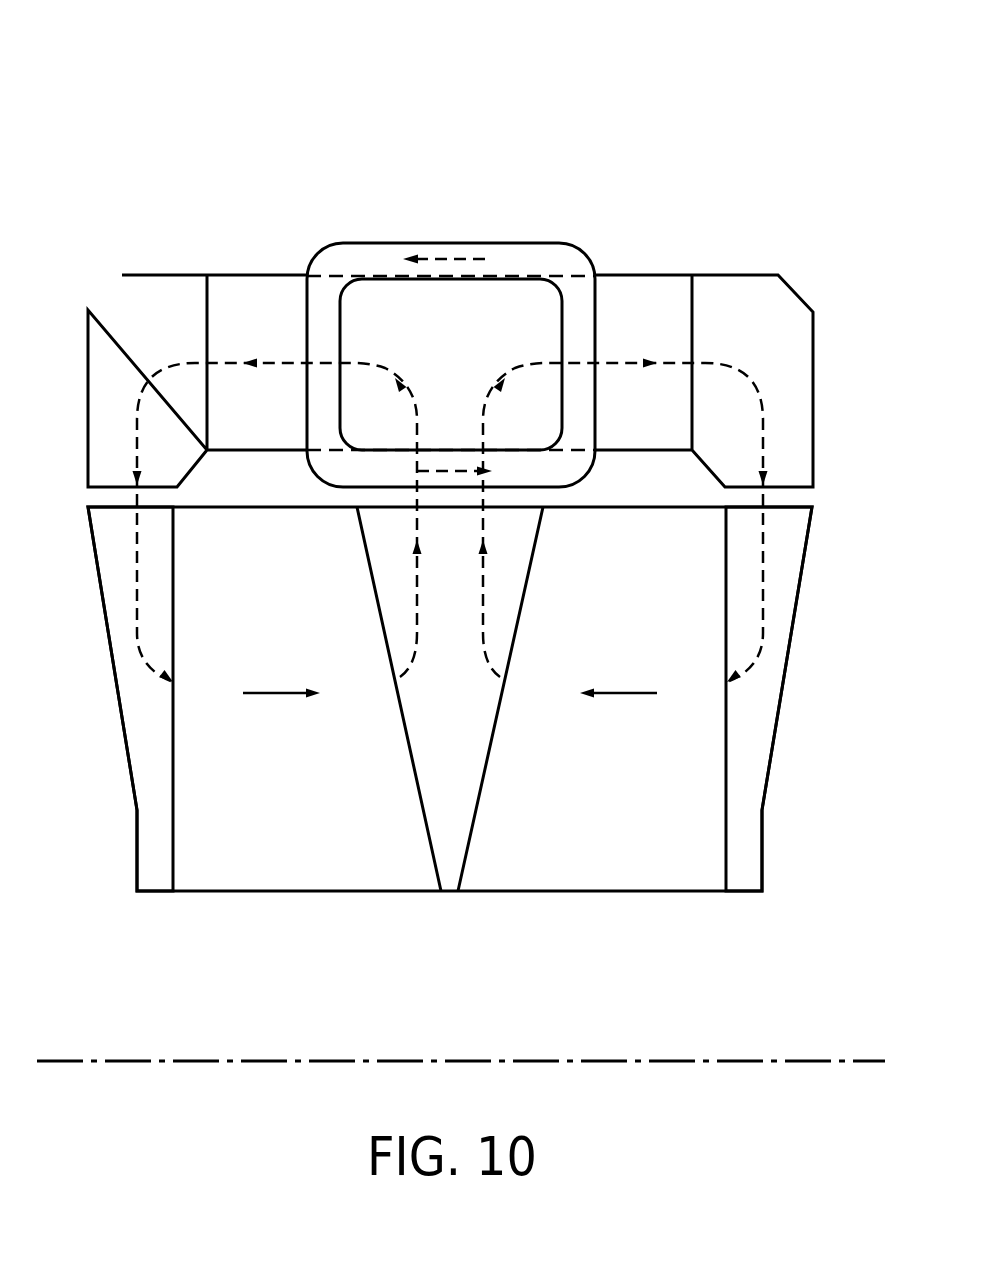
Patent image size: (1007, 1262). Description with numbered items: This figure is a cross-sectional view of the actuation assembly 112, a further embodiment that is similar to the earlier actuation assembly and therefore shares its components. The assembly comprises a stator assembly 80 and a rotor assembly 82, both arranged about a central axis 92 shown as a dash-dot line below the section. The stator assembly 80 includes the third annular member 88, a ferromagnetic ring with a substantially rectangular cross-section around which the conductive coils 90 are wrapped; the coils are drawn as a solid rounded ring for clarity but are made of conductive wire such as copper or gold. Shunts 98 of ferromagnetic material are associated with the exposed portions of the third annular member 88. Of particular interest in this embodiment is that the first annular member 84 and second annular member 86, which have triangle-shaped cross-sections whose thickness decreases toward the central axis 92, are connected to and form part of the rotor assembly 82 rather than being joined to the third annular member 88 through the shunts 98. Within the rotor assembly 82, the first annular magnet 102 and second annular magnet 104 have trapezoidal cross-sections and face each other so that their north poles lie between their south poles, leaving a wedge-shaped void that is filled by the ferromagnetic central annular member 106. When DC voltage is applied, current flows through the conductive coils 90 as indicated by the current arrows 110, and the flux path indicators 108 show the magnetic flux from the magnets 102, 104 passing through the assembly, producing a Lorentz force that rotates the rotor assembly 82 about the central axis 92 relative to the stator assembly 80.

The actuation assembly 112 is at (134, 114).
The stator assembly 80 is at (140, 275).
The shunts 98 is at (656, 293).
The conductive coils 90 is at (361, 243).
The third annular member 88 is at (356, 327).
The current arrows 110 is at (456, 262).
The flux path indicators 108 is at (135, 570).
The rotor assembly 82 is at (742, 893).
The first annular member 84 is at (140, 717).
The second annular member 86 is at (758, 718).
The central annular member 106 is at (460, 805).
The first annular magnet 102 is at (310, 872).
The second annular magnet 104 is at (595, 872).
The central axis 92 is at (100, 1061).